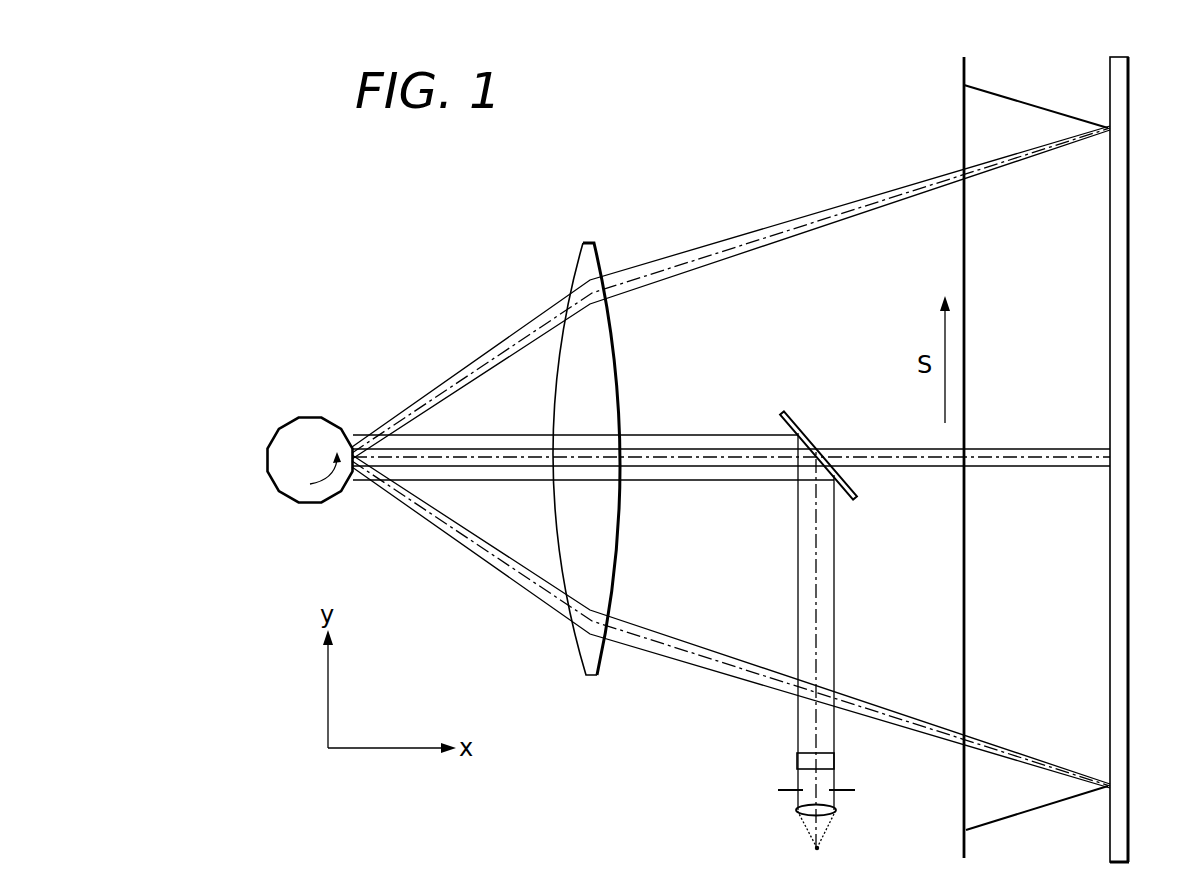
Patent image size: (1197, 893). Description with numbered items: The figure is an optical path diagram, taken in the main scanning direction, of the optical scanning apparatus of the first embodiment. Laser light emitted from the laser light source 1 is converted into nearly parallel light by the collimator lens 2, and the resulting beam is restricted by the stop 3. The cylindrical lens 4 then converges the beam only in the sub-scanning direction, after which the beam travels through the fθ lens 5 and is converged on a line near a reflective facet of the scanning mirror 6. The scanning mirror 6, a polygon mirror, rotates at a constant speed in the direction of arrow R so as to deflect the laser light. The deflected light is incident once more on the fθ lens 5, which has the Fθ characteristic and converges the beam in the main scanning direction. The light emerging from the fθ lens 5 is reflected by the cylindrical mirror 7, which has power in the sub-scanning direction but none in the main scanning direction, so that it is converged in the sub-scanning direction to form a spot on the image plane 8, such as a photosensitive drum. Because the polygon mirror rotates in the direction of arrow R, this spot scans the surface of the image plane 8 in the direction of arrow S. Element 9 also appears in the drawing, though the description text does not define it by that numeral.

The laser light source 1 is at (820, 850).
The collimator lens 2 is at (796, 810).
The stop 3 is at (841, 790).
The cylindrical lens 4 is at (797, 761).
The fθ lens 5 is at (596, 243).
The scanning mirror 6 is at (308, 417).
The cylindrical mirror 7 is at (1129, 90).
The image plane 8 is at (966, 681).
The reflecting mirror 9 is at (797, 413).